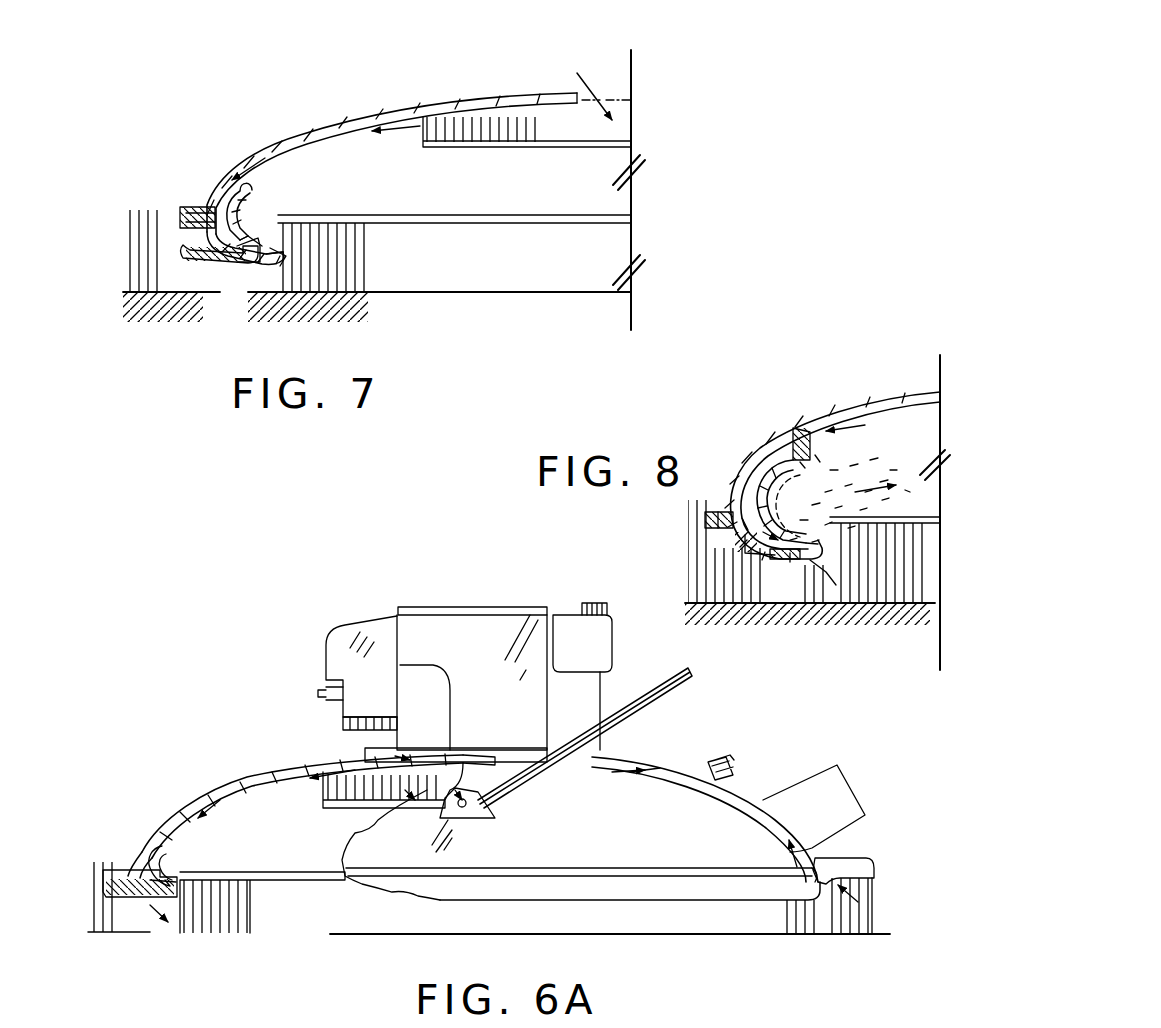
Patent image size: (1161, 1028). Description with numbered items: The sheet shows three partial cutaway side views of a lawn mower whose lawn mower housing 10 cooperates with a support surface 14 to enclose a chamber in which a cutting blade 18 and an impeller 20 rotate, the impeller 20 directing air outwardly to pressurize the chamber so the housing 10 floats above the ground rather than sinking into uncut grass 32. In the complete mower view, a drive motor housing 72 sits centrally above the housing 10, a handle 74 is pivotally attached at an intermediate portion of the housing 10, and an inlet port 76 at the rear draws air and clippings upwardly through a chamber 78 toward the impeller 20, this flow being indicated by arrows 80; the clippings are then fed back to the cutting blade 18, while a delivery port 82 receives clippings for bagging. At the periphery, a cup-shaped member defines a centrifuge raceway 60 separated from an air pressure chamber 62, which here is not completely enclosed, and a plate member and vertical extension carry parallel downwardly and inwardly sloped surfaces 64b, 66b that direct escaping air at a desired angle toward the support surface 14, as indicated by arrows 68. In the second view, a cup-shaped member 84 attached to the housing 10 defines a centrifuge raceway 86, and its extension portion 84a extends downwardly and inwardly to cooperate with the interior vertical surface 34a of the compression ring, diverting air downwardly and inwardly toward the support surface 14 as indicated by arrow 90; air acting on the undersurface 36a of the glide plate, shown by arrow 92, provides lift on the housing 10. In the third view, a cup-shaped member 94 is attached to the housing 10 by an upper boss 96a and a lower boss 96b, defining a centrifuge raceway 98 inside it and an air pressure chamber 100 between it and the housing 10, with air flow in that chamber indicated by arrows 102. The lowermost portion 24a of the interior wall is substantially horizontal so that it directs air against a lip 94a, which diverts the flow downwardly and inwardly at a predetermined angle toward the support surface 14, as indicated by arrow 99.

In FIG. 7, the lawn mower housing 10 is at (345, 97).
In FIG. 8, the lawn mower housing 10 is at (842, 397).
In FIG. 6A, the lawn mower housing 10 is at (255, 764).
In FIG. 7, the support surface 14 is at (460, 293).
In FIG. 8, the support surface 14 is at (912, 603).
In FIG. 6A, the support surface 14 is at (336, 932).
In FIG. 7, the cutting blade 18 is at (453, 216).
In FIG. 6A, the cutting blade 18 is at (312, 866).
In FIG. 7, the impeller 20 is at (448, 120).
In FIG. 6A, the impeller 20 is at (330, 795).
In FIG. 8, the lowermost portion of interior wall 24a is at (780, 600).
In FIG. 6A, the uncut grass 32 is at (252, 898).
In FIG. 7, the interior vertical surface 34a is at (258, 266).
In FIG. 7, the undersurface of glide plate 36a is at (195, 268).
In FIG. 6A, the centrifuge raceway 60 is at (165, 848).
In FIG. 6A, the air pressure chamber 62 is at (160, 830).
In FIG. 6A, the downwardly and inwardly sloped surface 64b is at (126, 858).
In FIG. 6A, the downwardly and inwardly sloped surface 66b is at (160, 868).
In FIG. 6A, the arrows 68 is at (152, 910).
In FIG. 6A, the drive motor housing 72 is at (470, 610).
In FIG. 6A, the handle 74 is at (650, 698).
In FIG. 6A, the inlet port 76 is at (835, 870).
In FIG. 6A, the chamber 78 is at (672, 768).
In FIG. 6A, the arrows 80 is at (636, 772).
In FIG. 6A, the delivery port 82 is at (815, 778).
In FIG. 7, the cup-shaped member 84 is at (247, 189).
In FIG. 7, the extension portion 84a is at (281, 257).
In FIG. 7, the centrifuge raceway 86 is at (245, 212).
In FIG. 7, the arrow 90 is at (276, 272).
In FIG. 7, the arrow 92 is at (222, 276).
In FIG. 8, the cup-shaped member 94 is at (752, 458).
In FIG. 8, the lip 94a is at (790, 558).
In FIG. 8, the upper boss 96a is at (797, 434).
In FIG. 8, the lower boss 96b is at (770, 560).
In FIG. 8, the centrifuge raceway 98 is at (808, 478).
In FIG. 8, the arrow 99 is at (820, 562).
In FIG. 8, the air pressure chamber 100 is at (745, 498).
In FIG. 8, the arrows 102 is at (735, 540).